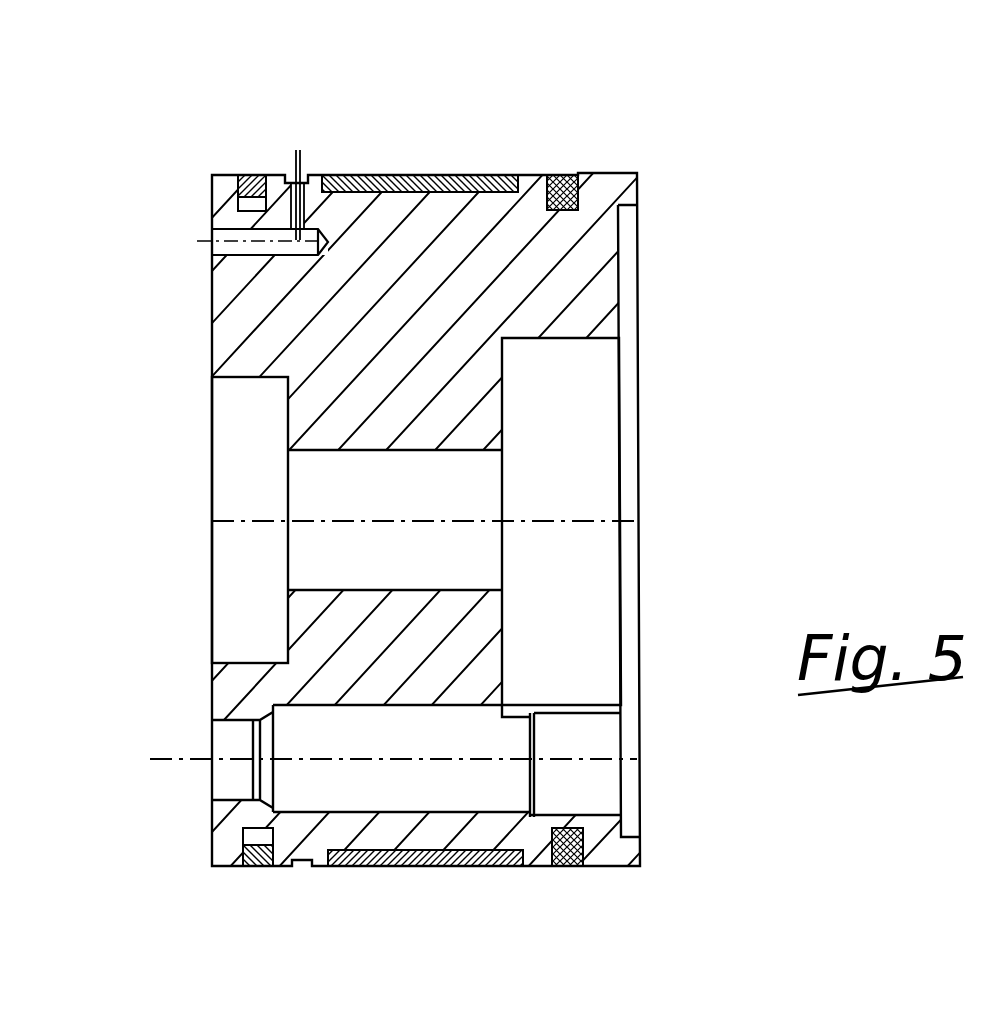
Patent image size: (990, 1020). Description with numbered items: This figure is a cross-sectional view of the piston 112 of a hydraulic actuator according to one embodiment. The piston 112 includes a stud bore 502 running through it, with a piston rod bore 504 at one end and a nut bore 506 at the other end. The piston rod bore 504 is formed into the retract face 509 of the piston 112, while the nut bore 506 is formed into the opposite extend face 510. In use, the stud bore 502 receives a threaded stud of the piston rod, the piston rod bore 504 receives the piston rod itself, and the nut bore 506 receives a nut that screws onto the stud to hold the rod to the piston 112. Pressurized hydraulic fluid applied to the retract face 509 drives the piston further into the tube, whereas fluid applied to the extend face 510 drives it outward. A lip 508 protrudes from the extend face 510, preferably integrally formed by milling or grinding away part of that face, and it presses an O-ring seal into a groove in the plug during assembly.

The piston 112 is at (385, 128).
The stud bore 502 is at (455, 495).
The piston rod bore 504 is at (250, 558).
The nut bore 506 is at (622, 628).
The lip 508 is at (637, 178).
The retract face 509 is at (212, 304).
The extend face 510 is at (638, 315).